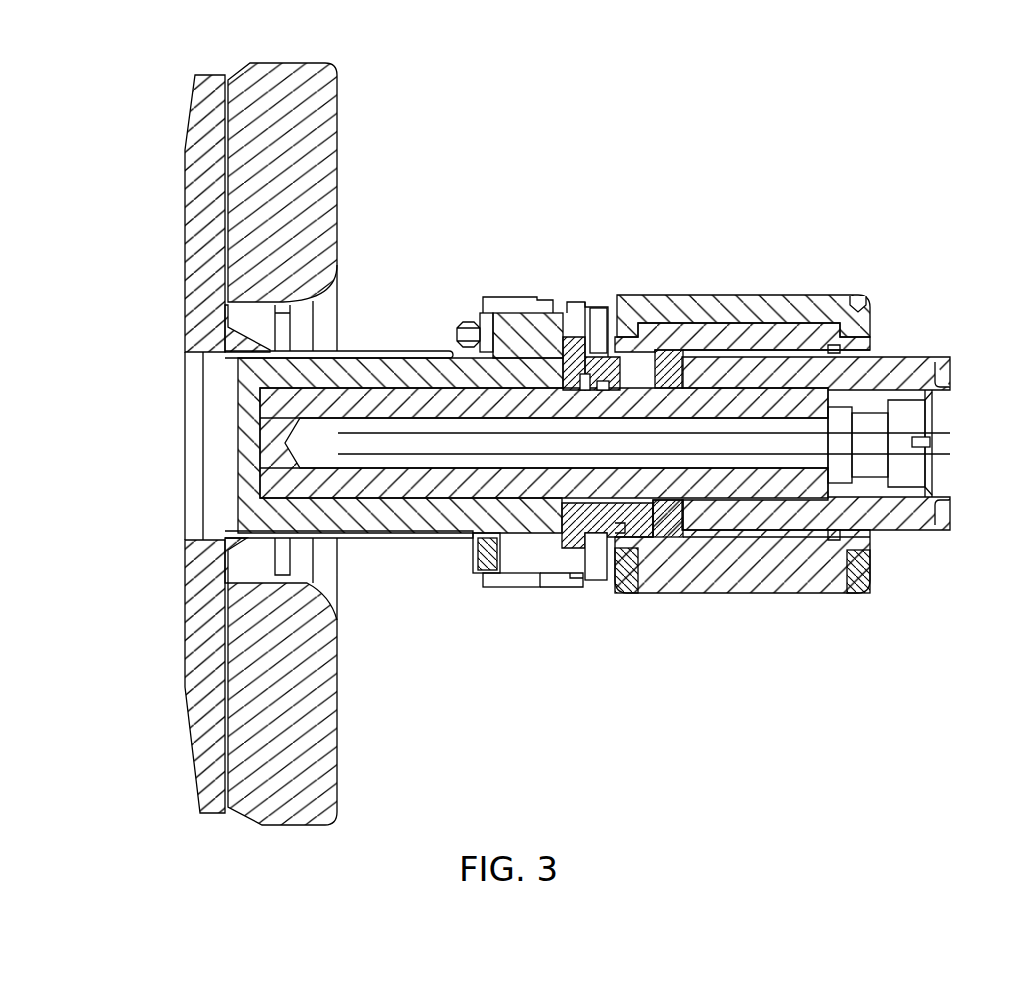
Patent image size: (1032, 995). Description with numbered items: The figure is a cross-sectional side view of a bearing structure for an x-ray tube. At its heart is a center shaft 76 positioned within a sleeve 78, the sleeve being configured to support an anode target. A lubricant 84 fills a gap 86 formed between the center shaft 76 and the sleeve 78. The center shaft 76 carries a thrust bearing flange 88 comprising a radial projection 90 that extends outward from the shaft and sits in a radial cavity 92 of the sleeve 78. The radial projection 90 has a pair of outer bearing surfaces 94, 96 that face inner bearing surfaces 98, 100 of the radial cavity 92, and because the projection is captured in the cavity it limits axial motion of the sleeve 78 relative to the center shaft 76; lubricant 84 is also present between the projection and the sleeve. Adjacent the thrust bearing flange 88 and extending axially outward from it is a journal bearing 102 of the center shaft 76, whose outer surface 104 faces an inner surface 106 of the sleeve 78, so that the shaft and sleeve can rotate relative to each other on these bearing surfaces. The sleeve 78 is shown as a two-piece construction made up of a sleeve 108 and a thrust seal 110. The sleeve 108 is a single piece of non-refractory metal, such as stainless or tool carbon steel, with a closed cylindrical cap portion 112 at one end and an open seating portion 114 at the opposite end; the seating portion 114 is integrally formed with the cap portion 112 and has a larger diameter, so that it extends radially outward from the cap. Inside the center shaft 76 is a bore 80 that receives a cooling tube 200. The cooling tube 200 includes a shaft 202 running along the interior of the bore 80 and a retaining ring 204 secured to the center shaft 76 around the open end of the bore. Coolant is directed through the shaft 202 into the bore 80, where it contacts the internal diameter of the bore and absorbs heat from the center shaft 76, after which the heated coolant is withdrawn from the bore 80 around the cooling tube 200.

The center shaft 76 is at (405, 494).
The sleeve 78 is at (392, 346).
The bore 80 is at (446, 471).
The lubricant 84 is at (290, 468).
The gap 86 is at (355, 538).
The thrust bearing flange 88 is at (519, 526).
The radial projection 90 is at (550, 556).
The radial cavity 92 is at (540, 590).
The outer bearing surface 94 is at (548, 302).
The outer bearing surface 96 is at (567, 305).
The inner bearing surface 98 is at (494, 340).
The inner bearing surface 100 is at (613, 360).
The journal bearing 102 is at (353, 368).
The outer surface 104 is at (300, 432).
The inner surface 106 is at (228, 330).
The sleeve 108 is at (430, 362).
The thrust seal 110 is at (668, 294).
The cap portion 112 is at (471, 573).
The seating portion 114 is at (497, 297).
The cooling tube 200 is at (721, 418).
The shaft 202 is at (722, 440).
The retaining ring 204 is at (950, 397).